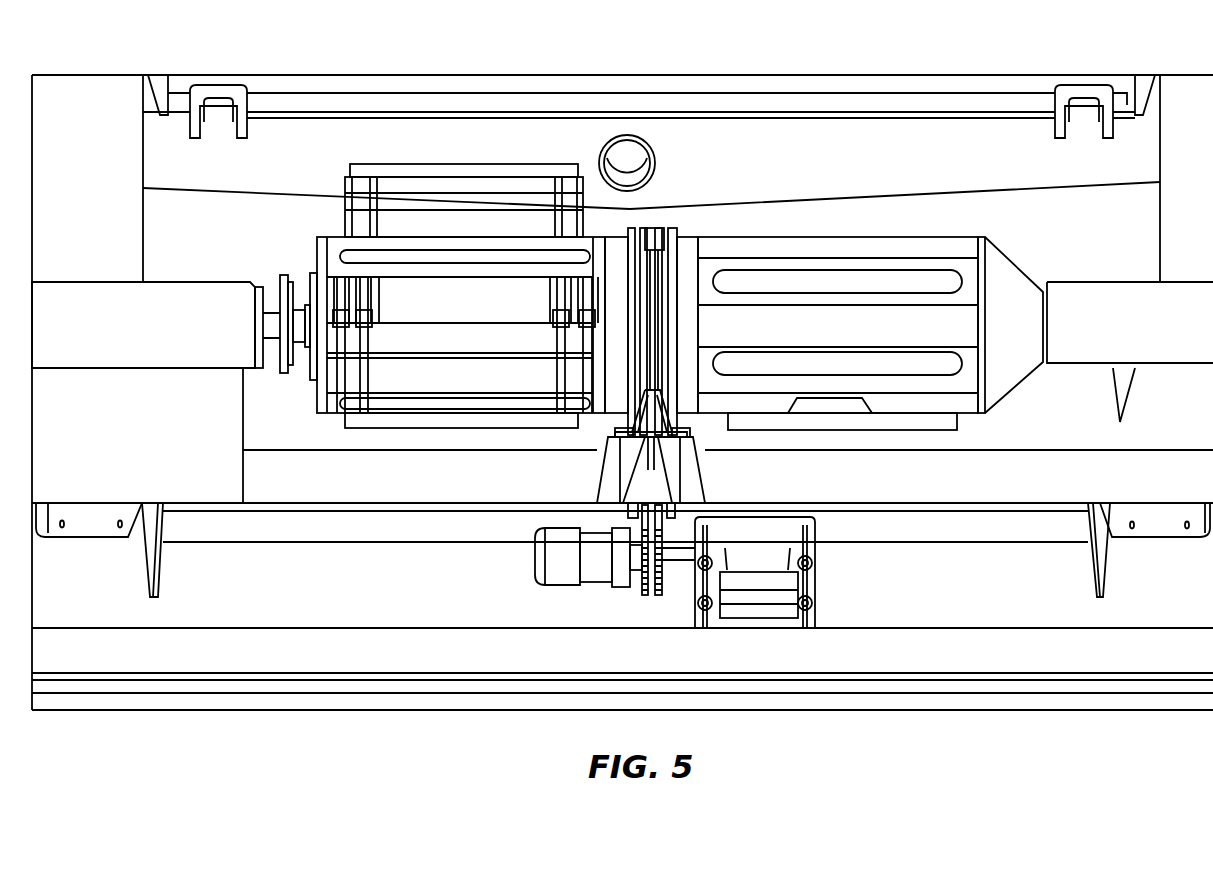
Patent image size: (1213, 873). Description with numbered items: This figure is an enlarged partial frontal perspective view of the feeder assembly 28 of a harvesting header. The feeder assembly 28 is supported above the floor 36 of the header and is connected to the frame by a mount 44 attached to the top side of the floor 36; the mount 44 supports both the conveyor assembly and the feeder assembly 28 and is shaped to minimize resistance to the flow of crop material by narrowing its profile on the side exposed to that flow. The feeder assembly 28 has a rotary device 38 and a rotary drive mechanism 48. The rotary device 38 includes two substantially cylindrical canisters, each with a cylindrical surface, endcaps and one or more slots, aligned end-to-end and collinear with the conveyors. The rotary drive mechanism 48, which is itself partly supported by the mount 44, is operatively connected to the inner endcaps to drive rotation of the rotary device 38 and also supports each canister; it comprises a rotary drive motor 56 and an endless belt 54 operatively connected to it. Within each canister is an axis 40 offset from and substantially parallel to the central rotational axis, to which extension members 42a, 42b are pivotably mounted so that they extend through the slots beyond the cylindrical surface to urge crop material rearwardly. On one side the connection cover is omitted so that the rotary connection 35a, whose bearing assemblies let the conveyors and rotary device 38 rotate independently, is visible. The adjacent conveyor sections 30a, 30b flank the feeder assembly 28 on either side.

The feeder assembly 28 is at (676, 190).
The left roller support 30a is at (166, 337).
The right roller support 30b is at (1164, 337).
The rotary connection 35a is at (266, 250).
The floor 36 is at (348, 487).
The rotary device 38 is at (840, 237).
The axis 40 is at (433, 375).
The extension member 42a is at (427, 164).
The extension member 42b is at (840, 372).
The mount 44 is at (600, 472).
The rotary drive mechanism 48 is at (582, 603).
The endless belt 54 is at (645, 597).
The rotary drive motor 56 is at (560, 588).